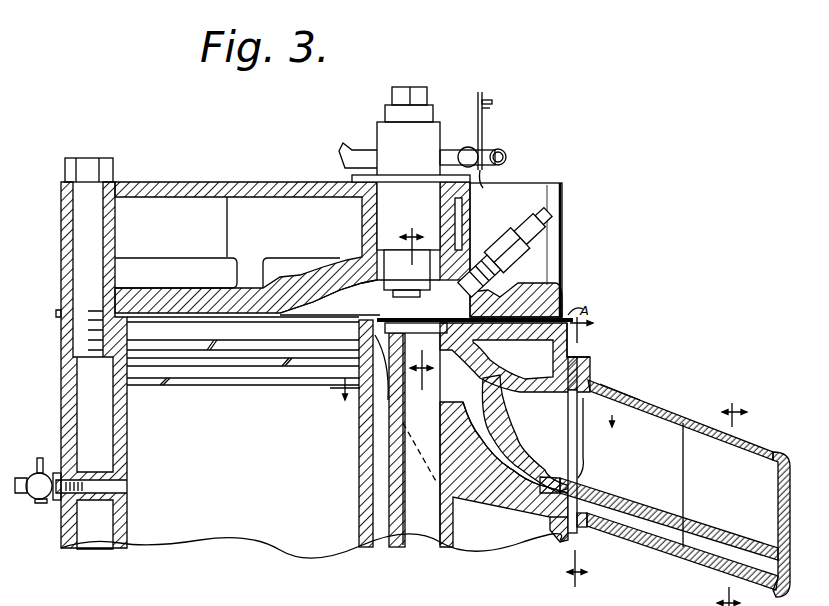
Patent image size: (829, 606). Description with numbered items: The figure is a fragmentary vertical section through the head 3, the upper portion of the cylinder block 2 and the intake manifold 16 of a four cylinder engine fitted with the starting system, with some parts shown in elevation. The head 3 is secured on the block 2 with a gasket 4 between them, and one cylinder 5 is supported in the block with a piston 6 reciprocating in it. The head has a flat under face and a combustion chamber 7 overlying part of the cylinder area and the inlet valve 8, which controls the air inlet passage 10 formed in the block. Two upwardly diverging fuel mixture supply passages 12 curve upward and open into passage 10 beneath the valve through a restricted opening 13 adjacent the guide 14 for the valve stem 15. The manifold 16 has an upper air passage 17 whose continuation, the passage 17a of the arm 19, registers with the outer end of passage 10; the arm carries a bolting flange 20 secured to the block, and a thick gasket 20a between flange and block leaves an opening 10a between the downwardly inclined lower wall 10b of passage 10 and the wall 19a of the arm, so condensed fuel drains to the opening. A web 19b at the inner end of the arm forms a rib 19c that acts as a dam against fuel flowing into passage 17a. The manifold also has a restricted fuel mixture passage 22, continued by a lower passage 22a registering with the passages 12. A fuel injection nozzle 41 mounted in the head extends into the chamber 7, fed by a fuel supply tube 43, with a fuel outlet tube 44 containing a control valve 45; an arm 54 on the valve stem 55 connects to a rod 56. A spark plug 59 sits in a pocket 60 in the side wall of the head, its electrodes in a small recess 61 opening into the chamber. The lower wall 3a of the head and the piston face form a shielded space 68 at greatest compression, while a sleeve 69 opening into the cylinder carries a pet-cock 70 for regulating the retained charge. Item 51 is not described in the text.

The cylinder block 2 is at (64, 390).
The head 3 is at (64, 263).
The lower wall 3a is at (142, 293).
The gasket 4 is at (416, 381).
The cylinder 5 is at (122, 530).
The piston 6 is at (340, 542).
The combustion chamber 7 is at (360, 297).
The inlet valve 8 is at (425, 316).
The air inlet passage 10 is at (583, 380).
The opening 10a is at (580, 485).
The lower wall 10b is at (528, 432).
The fuel mixture supply passage 12 is at (535, 533).
The restricted opening 13 is at (445, 403).
The guide 14 is at (443, 447).
The stem 15 is at (422, 518).
The intake manifold 16 is at (668, 413).
The air passage 17 is at (703, 500).
The passage of arm 17a is at (618, 412).
The arm 19 is at (617, 390).
The wall 19a is at (640, 513).
The web 19b is at (583, 424).
The rib 19c is at (583, 467).
The bolting flange 20 is at (585, 352).
The gasket 20a is at (565, 538).
The fuel mixture passage 22 is at (710, 547).
The lower passage 22a is at (617, 512).
The fuel injection nozzle 41 is at (387, 132).
The fuel supply tube 43 is at (353, 150).
The fuel outlet tube 44 is at (450, 153).
The control valve 45 is at (465, 149).
The bracket 51 is at (486, 102).
The arm 54 is at (480, 92).
The stem 55 is at (490, 186).
The rod 56 is at (487, 106).
The spark plug 59 is at (515, 243).
The pocket 60 is at (525, 193).
The recess 61 is at (482, 240).
The shielded space 68 is at (177, 310).
The sleeve 69 is at (115, 487).
The pet-cock 70 is at (33, 474).